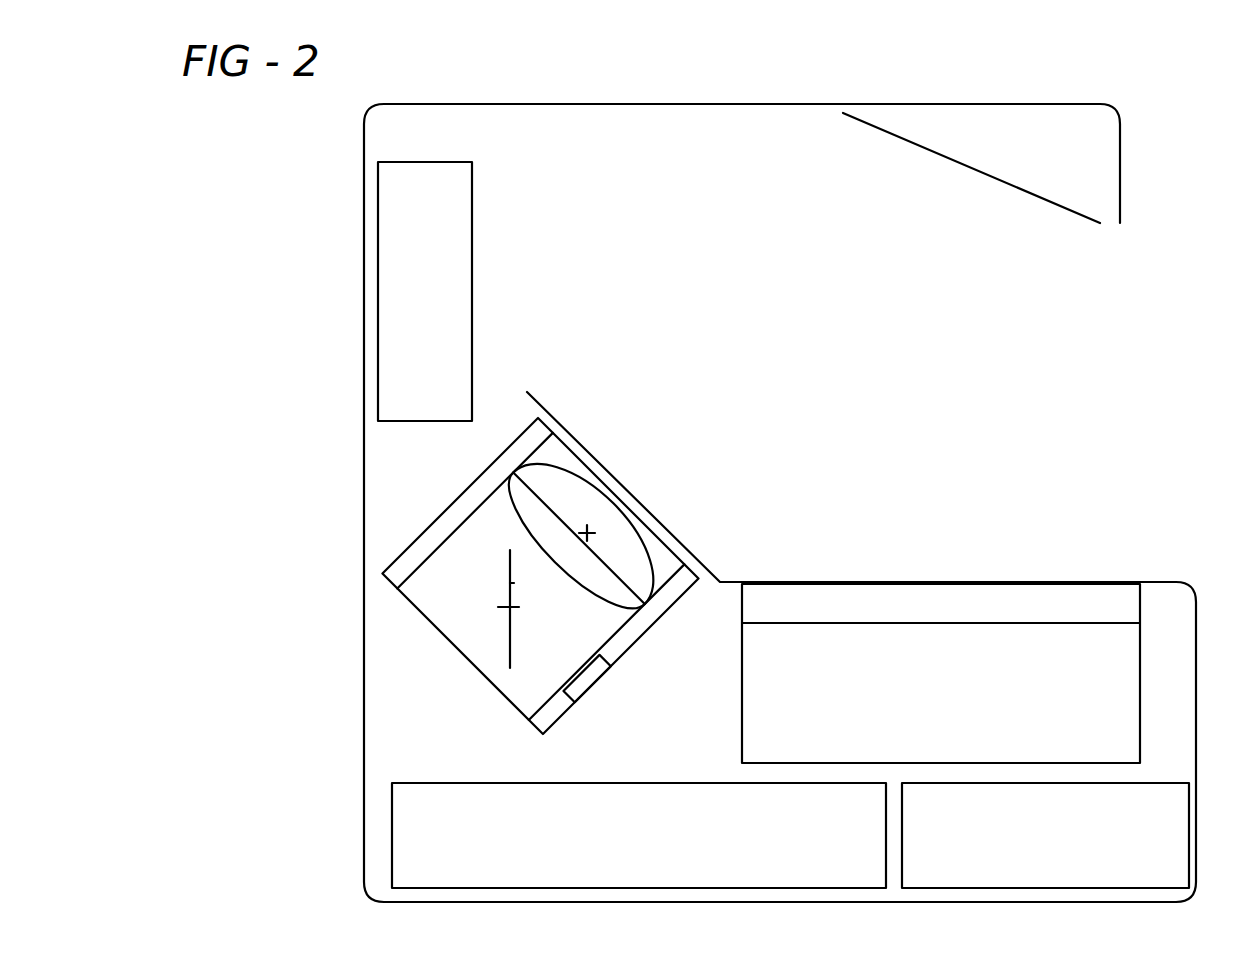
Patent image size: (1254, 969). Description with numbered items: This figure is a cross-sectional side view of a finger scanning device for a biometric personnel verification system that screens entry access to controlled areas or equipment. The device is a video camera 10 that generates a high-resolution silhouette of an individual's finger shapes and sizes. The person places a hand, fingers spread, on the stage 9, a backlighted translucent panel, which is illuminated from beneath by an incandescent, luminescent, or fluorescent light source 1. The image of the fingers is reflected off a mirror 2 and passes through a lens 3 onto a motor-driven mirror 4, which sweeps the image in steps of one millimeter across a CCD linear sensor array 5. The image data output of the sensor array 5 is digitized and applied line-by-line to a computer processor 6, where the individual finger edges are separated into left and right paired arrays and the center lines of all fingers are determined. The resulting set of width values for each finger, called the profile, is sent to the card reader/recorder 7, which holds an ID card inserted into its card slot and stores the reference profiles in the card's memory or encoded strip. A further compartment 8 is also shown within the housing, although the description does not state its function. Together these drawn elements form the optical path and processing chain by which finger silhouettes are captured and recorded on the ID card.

The light source 1 is at (945, 703).
The mirror 2 is at (1040, 150).
The lens 3 is at (594, 505).
The motor-driven mirror 4 is at (499, 609).
The CCD linear sensor array 5 is at (665, 702).
The computer processor 6 is at (651, 845).
The card reader/recorder 7 is at (1050, 843).
The side compartment 8 is at (440, 262).
The stage 9 is at (967, 607).
The video camera 10 is at (780, 503).